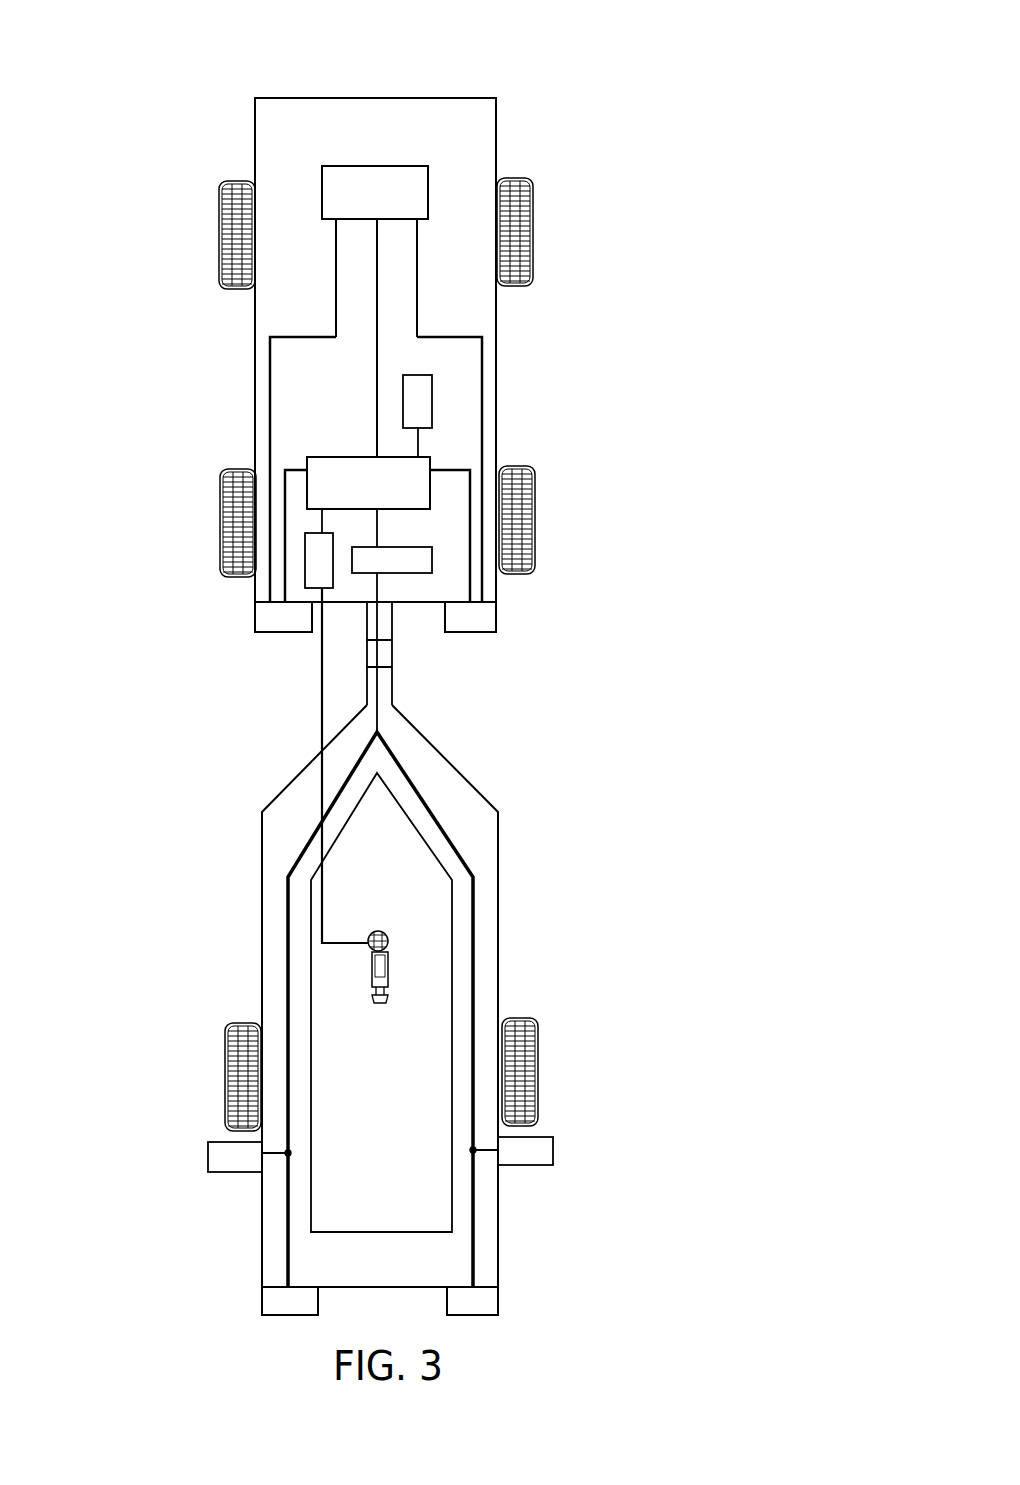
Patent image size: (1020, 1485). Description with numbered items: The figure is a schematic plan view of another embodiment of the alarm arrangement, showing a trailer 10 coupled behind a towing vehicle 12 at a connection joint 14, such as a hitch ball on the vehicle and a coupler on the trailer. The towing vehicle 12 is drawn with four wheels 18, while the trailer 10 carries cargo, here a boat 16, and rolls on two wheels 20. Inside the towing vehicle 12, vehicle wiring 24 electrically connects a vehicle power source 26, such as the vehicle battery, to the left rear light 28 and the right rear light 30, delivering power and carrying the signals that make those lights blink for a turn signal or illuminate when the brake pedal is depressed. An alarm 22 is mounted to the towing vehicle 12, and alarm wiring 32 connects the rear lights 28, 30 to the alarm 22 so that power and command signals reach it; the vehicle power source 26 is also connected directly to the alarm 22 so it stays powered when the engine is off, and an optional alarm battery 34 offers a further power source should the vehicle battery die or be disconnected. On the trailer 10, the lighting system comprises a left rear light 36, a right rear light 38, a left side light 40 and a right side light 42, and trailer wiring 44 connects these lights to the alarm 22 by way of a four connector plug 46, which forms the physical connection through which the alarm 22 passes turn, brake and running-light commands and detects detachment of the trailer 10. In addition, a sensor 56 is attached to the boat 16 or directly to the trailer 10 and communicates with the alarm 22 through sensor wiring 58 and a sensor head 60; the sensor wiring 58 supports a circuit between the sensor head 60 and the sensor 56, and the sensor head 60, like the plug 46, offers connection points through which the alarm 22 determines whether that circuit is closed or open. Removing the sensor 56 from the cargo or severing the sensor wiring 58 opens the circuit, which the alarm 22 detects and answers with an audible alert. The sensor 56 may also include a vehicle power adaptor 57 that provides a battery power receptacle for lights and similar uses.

The trailer 10 is at (488, 796).
The towing vehicle 12 is at (473, 107).
The connection joint 14 is at (385, 653).
The boat 16 is at (442, 878).
The wheels 18 is at (532, 182).
The wheels 20 is at (227, 1080).
The alarm 22 is at (422, 455).
The vehicle wiring 24 is at (283, 338).
The vehicle power source 26 is at (345, 190).
The left rear light 28 is at (267, 623).
The right rear light 30 is at (497, 612).
The alarm wiring 32 is at (283, 475).
The alarm battery 34 is at (422, 392).
The left rear light 36 is at (268, 1305).
The right rear light 38 is at (497, 1300).
The left side light 40 is at (225, 1162).
The right side light 42 is at (553, 1150).
The trailer wiring 44 is at (287, 902).
The four connector plug 46 is at (395, 567).
The sensor 56 is at (387, 934).
The vehicle power adaptor 57 is at (382, 967).
The sensor wiring 58 is at (322, 693).
The sensor head 60 is at (316, 558).